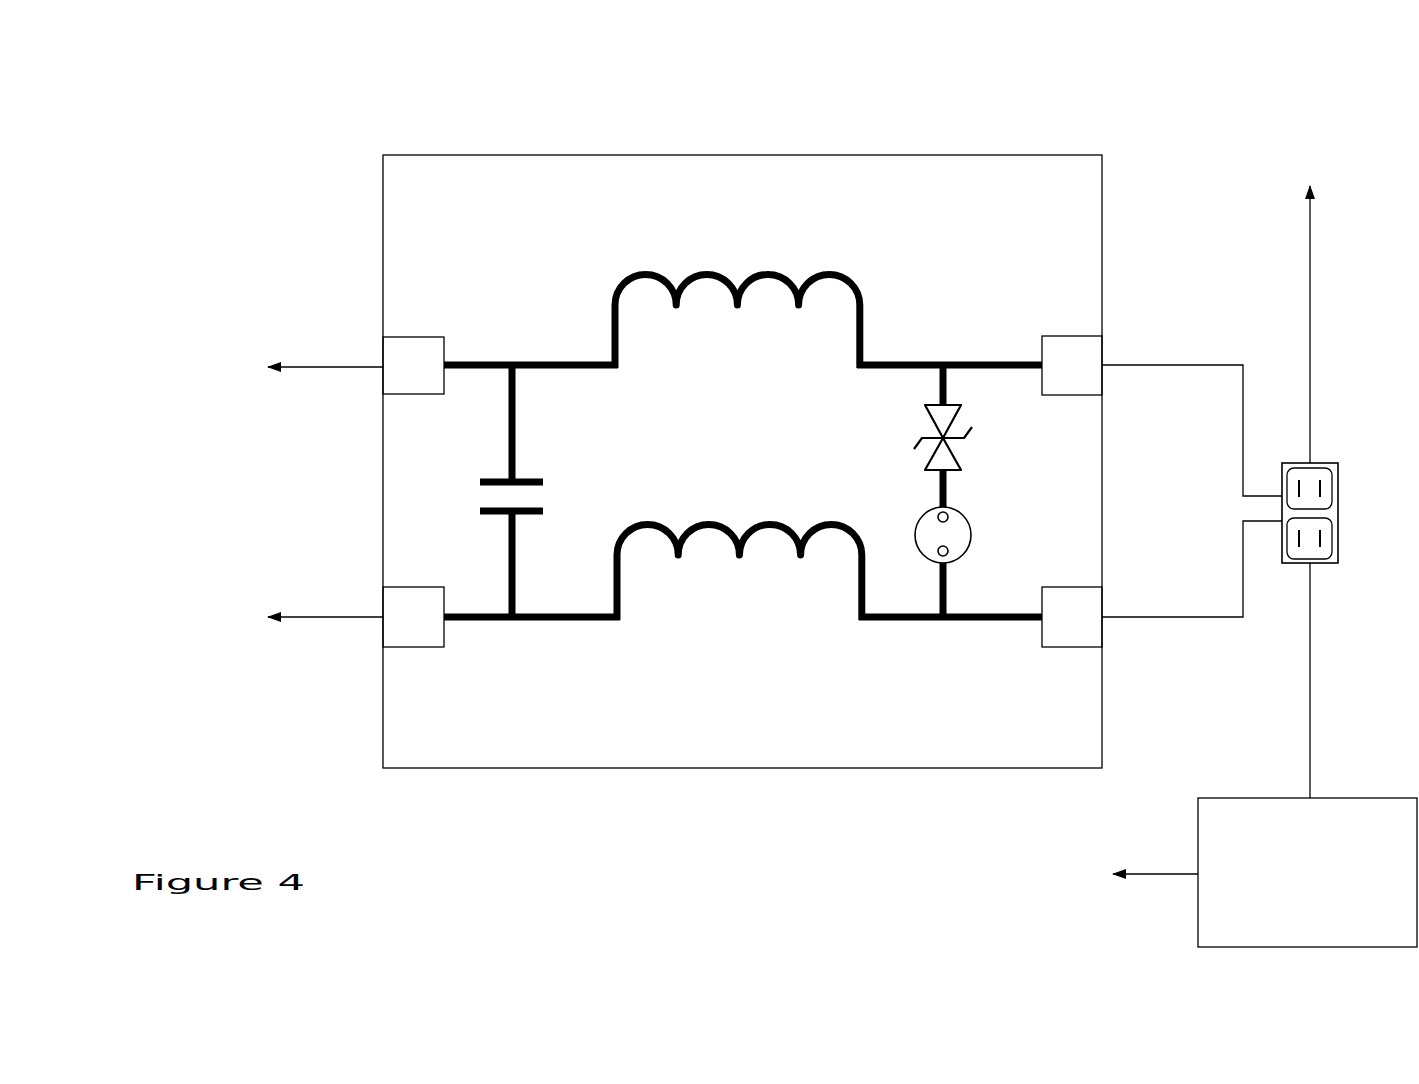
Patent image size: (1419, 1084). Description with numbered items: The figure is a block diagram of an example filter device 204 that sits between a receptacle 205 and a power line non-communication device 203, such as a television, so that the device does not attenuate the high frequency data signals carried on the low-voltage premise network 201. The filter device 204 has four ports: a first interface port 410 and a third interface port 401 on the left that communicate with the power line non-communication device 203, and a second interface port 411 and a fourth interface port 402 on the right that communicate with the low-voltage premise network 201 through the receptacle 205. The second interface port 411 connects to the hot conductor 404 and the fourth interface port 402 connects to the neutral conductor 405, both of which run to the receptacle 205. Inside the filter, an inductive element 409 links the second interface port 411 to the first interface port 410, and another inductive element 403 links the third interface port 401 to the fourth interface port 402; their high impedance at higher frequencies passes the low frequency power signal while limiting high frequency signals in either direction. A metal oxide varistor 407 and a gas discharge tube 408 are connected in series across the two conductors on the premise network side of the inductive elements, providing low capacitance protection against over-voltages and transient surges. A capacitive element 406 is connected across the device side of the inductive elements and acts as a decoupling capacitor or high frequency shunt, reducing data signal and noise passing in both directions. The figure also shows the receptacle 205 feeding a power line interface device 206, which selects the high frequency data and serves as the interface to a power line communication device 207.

The low-voltage premise network 201 is at (1305, 263).
The power line non-communication device 203 is at (236, 492).
The filter device 204 is at (742, 415).
The receptacle 205 is at (1342, 513).
The power line interface device 206 is at (1307, 755).
The power line communication device 207 is at (1030, 870).
The third interface port 401 is at (418, 628).
The fourth interface port 402 is at (1064, 615).
The inductive element 403 is at (739, 584).
The hot conductor 404 is at (1192, 417).
The neutral conductor 405 is at (1192, 599).
The capacitive element 406 is at (567, 491).
The metal oxide varistor 407 is at (928, 440).
The gas discharge tube 408 is at (973, 560).
The inductive element 409 is at (737, 290).
The first interface port 410 is at (422, 348).
The second interface port 411 is at (1056, 354).